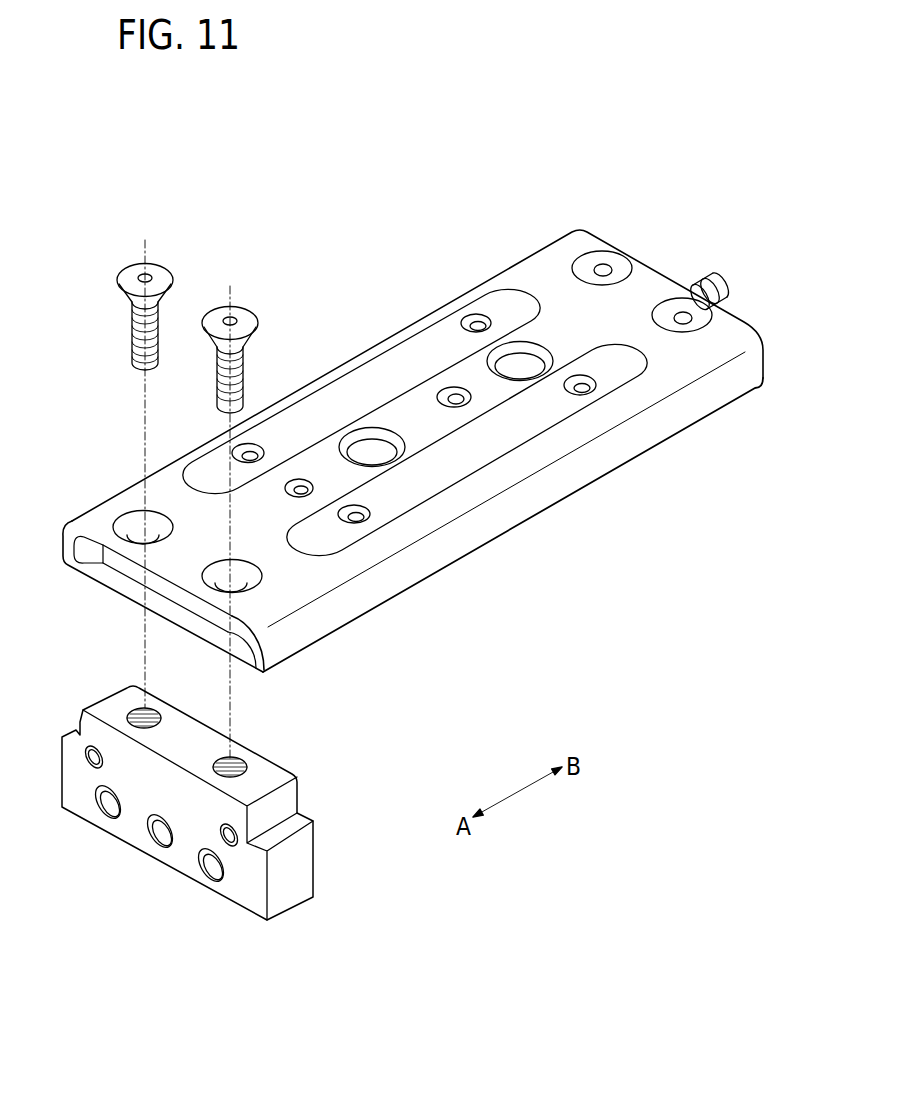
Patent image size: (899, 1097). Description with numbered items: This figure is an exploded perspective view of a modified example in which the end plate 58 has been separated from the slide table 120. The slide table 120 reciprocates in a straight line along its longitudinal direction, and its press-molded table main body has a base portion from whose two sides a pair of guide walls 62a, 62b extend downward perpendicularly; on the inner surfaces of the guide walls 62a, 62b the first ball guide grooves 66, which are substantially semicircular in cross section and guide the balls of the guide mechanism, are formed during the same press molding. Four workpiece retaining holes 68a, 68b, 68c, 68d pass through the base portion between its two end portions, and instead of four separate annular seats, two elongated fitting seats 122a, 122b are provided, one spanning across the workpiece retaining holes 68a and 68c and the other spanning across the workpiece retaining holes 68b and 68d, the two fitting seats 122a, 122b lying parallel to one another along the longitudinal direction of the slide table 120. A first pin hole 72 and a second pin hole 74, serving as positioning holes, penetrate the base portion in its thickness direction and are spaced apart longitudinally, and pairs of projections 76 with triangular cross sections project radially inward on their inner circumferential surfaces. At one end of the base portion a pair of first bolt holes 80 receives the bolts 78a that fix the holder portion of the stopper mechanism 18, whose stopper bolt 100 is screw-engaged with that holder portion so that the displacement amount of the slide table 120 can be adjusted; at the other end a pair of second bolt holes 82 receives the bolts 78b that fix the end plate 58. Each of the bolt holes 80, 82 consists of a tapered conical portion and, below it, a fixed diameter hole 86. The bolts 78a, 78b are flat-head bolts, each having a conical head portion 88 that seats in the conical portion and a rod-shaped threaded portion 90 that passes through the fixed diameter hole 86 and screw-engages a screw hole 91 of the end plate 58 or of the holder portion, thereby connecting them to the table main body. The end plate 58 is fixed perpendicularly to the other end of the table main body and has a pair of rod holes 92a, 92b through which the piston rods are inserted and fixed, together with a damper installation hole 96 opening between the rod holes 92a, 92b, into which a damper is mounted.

The stopper mechanism 18 is at (725, 262).
The end plate 58 is at (133, 849).
The guide wall 62a is at (64, 544).
The guide wall 62b is at (329, 636).
The first ball guide groove 66 is at (252, 656).
The workpiece retaining hole 68a is at (459, 316).
The workpiece retaining hole 68b is at (563, 389).
The workpiece retaining hole 68c is at (256, 445).
The workpiece retaining hole 68d is at (363, 503).
The first pin hole 72 is at (307, 481).
The second pin hole 74 is at (452, 398).
The projection 76 is at (290, 494).
The bolt 78a is at (671, 297).
The bolt 78b is at (231, 316).
The first bolt hole 80 is at (681, 323).
The second bolt hole 82 is at (223, 574).
The fixed diameter hole 86 is at (214, 595).
The head portion 88 is at (257, 327).
The threaded portion 90 is at (243, 382).
The screw hole 91 is at (243, 759).
The rod hole 92a is at (104, 822).
The rod hole 92b is at (209, 880).
The damper installation hole 96 is at (159, 850).
The stopper bolt 100 is at (729, 290).
The slide table 120 is at (503, 262).
The fitting seat 122a is at (416, 357).
The fitting seat 122b is at (480, 450).